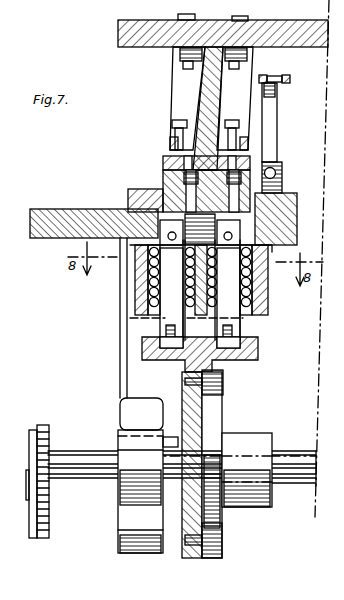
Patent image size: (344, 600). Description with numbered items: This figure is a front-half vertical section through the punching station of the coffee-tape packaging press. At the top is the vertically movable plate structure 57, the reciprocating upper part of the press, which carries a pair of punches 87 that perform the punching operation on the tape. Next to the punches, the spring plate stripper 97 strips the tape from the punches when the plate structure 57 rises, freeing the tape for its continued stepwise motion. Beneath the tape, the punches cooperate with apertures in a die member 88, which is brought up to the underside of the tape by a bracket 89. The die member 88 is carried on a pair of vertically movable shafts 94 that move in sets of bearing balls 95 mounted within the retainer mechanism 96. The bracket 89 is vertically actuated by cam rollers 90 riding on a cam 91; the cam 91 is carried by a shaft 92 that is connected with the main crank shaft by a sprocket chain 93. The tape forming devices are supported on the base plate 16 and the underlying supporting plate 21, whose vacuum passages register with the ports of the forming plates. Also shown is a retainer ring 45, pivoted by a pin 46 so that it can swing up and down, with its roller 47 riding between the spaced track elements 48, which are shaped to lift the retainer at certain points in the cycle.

The vertically movable plate structure 57 is at (118, 26).
The spring plate stripper 97 is at (168, 165).
The roller 47 is at (275, 77).
The track elements 48 is at (263, 75).
The retainer ring 45 is at (277, 113).
The pin 46 is at (282, 166).
The punches 87 is at (163, 183).
The die member 88 is at (128, 196).
The supporting plate 21 is at (128, 190).
The base plate 16 is at (58, 209).
The bearing balls 95 is at (135, 296).
The retainer mechanism 96 is at (268, 296).
The vertically movable shafts 94 is at (167, 321).
The bracket 89 is at (260, 358).
The cam rollers 90 is at (213, 535).
The cam 91 is at (215, 417).
The shaft 92 is at (86, 474).
The sprocket chain 93 is at (33, 540).